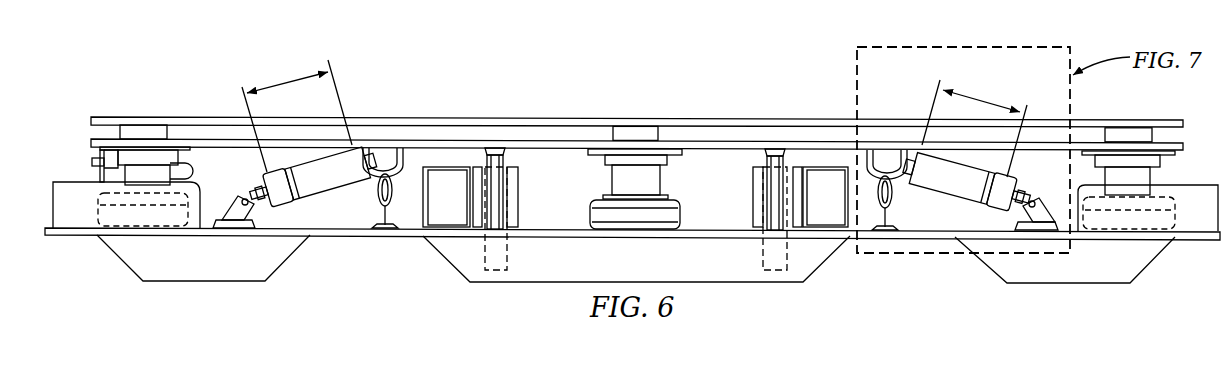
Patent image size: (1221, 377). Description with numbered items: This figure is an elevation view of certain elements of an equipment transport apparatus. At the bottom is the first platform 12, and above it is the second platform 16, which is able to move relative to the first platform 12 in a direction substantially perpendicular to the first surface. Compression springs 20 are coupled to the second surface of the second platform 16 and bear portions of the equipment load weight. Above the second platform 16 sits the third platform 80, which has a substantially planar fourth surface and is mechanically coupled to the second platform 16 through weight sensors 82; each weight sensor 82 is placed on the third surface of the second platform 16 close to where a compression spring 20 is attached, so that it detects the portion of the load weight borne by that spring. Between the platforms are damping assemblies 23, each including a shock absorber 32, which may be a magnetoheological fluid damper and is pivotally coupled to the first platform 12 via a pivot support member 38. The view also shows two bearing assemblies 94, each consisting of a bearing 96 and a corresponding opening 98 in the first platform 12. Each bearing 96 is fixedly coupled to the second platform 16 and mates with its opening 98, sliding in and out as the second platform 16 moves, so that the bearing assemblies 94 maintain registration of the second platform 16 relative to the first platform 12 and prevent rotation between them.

The first platform 12 is at (420, 237).
The second platform 16 is at (548, 141).
The compression spring 20 is at (137, 173).
The damping assembly 23 is at (288, 80).
The shock absorber 32 is at (325, 185).
The pivot support member 38 is at (238, 223).
The third platform 80 is at (195, 117).
The weight sensor 82 is at (140, 132).
The bearing assembly 94 is at (534, 171).
The bearing 96 is at (487, 152).
The opening 98 is at (500, 234).